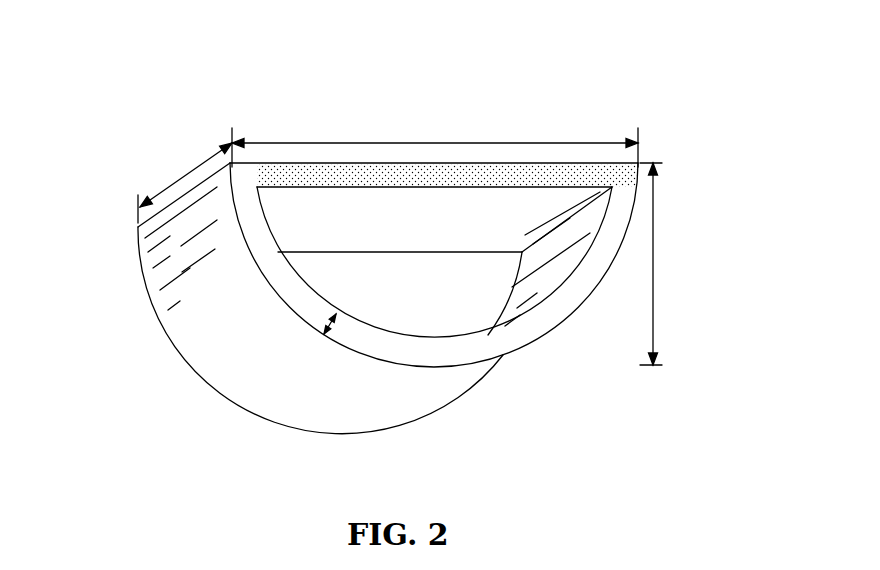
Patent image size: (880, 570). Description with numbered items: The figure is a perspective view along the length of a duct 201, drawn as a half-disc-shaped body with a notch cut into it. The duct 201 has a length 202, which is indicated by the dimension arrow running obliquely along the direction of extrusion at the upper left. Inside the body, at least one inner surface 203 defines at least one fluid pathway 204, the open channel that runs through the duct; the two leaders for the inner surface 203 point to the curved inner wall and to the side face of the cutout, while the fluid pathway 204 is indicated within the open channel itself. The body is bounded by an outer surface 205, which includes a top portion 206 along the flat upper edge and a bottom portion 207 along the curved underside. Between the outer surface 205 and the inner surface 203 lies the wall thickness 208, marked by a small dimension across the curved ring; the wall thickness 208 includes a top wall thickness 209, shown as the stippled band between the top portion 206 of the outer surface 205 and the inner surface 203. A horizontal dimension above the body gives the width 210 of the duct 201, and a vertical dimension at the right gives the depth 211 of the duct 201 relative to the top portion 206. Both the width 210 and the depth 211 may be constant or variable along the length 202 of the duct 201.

The duct 201 is at (647, 87).
The length 202 is at (185, 177).
The inner surface 203 is at (582, 235).
The fluid pathway 204 is at (423, 290).
The outer surface 205 is at (310, 163).
The top portion 206 is at (268, 163).
The bottom portion 207 is at (208, 313).
The wall thickness 208 is at (331, 325).
The top wall thickness 209 is at (318, 183).
The width 210 is at (433, 142).
The depth 211 is at (655, 265).